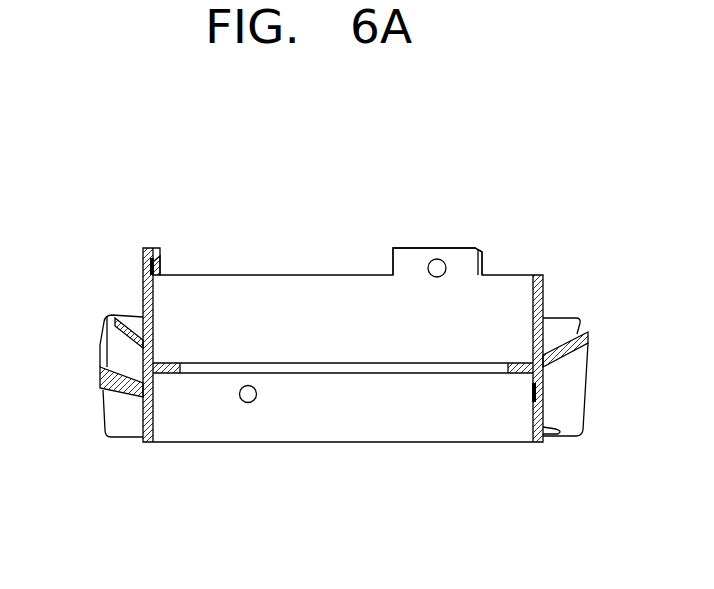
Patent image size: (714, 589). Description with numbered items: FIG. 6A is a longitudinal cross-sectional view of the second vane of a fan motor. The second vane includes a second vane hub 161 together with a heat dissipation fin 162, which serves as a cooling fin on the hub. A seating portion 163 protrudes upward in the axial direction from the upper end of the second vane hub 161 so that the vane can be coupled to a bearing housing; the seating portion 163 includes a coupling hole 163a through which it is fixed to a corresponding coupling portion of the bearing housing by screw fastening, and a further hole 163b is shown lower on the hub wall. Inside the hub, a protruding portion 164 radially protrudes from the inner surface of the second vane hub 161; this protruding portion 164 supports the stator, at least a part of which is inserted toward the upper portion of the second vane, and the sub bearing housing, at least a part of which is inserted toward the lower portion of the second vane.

The second vane hub 161 is at (536, 293).
The heat dissipation fin 162 is at (100, 378).
The seating portion 163 is at (412, 253).
The coupling hole 163a is at (439, 267).
The lower hole 163b is at (248, 395).
The protruding portion 164 is at (328, 362).